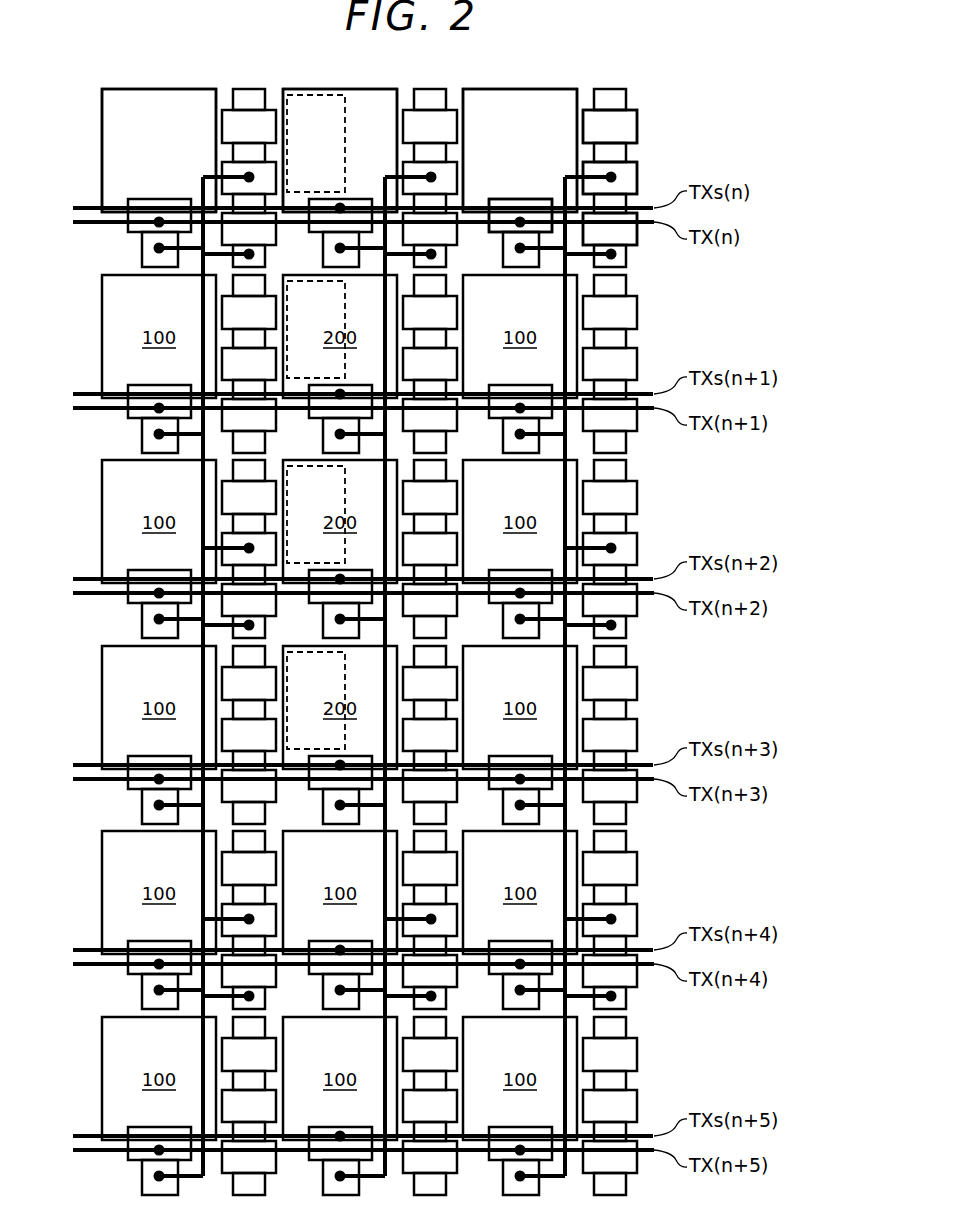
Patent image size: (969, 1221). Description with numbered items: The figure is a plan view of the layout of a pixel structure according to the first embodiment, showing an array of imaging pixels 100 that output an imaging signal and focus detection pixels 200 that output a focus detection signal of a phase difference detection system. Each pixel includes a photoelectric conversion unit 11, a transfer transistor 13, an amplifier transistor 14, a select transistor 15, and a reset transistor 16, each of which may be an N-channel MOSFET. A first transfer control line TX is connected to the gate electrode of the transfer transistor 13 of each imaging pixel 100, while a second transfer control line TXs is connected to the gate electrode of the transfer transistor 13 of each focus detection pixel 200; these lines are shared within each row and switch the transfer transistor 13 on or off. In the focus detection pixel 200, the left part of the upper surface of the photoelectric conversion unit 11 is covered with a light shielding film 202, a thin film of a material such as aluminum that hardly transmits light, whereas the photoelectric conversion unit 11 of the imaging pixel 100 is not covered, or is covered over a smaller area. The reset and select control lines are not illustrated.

The photoelectric conversion unit 11 is at (522, 88).
The transfer transistor 13 is at (542, 199).
The amplifier transistor 14 is at (632, 168).
The select transistor 15 is at (632, 120).
The reset transistor 16 is at (635, 235).
The imaging pixel 100 is at (142, 162).
The focus detection pixel 200 is at (323, 162).
The light shielding film 202 is at (348, 110).